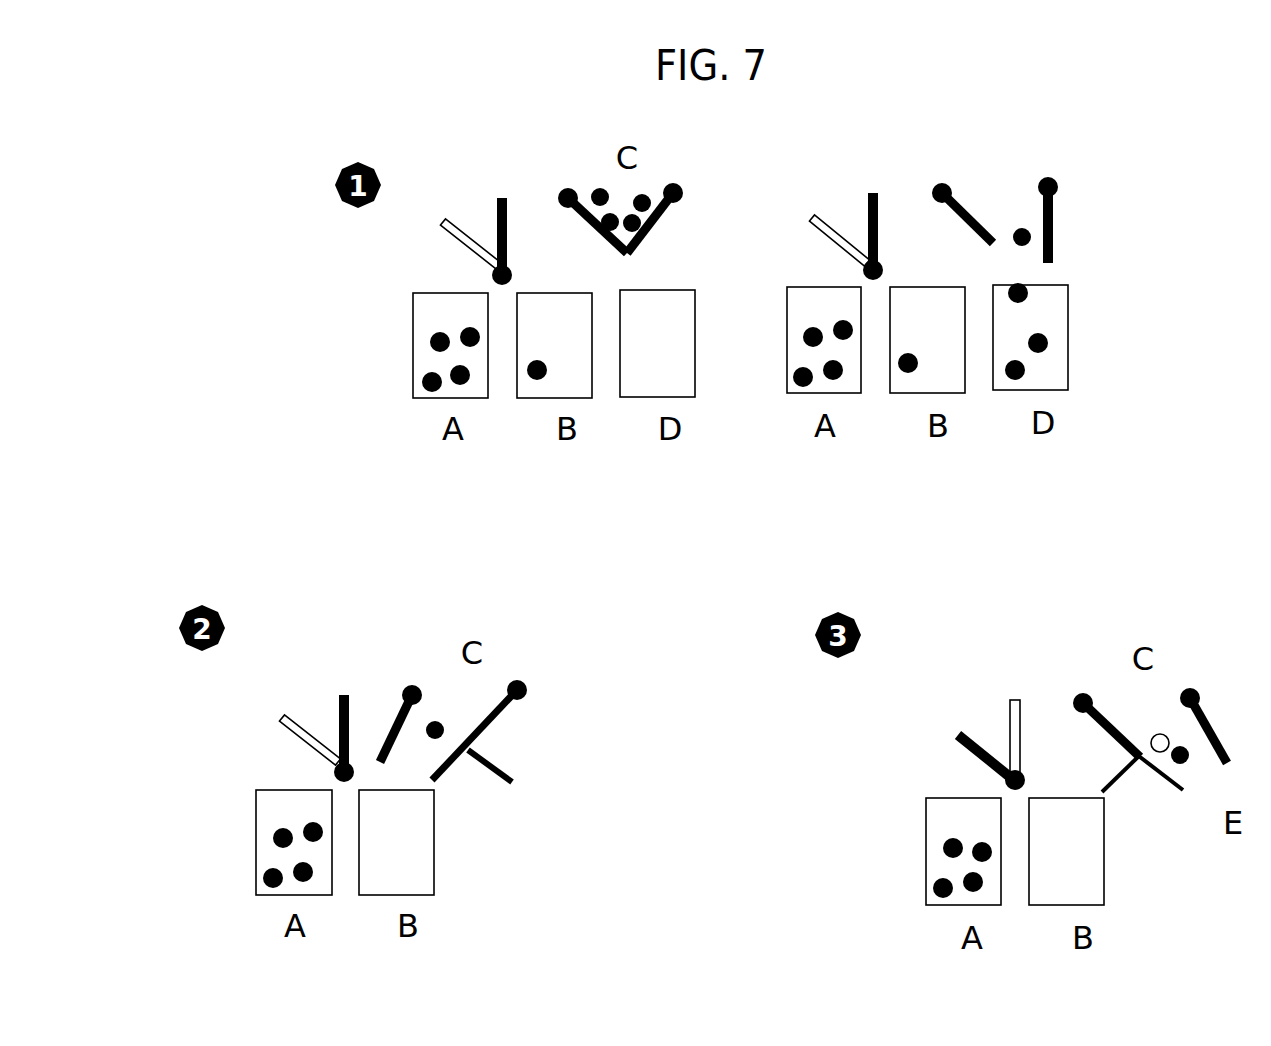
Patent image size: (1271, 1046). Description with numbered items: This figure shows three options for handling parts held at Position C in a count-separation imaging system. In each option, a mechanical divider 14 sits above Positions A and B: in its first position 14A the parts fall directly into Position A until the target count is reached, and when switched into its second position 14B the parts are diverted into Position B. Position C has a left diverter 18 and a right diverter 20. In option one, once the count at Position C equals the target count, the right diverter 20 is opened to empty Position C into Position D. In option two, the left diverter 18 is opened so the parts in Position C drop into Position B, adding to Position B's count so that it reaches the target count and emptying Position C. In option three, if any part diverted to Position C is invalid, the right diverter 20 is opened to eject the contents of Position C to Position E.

The mechanical divider 14 is at (313, 690).
The first position 14A is at (505, 200).
The second position 14B is at (448, 228).
The left diverter 18 is at (593, 222).
The right diverter 20 is at (660, 218).